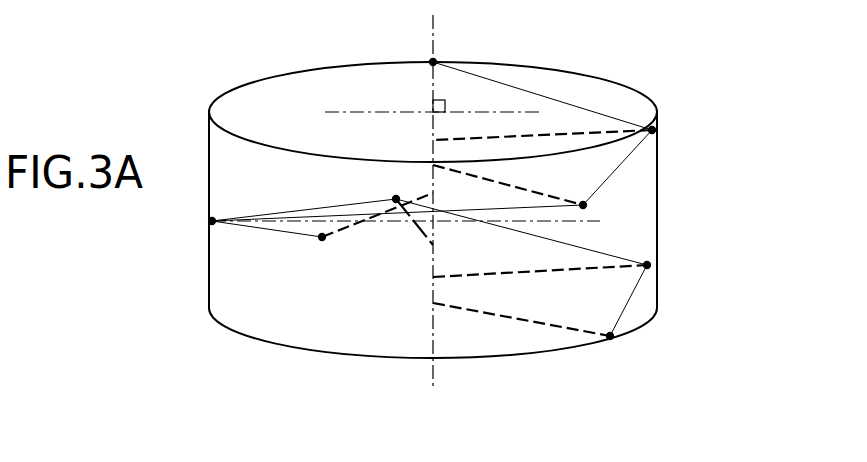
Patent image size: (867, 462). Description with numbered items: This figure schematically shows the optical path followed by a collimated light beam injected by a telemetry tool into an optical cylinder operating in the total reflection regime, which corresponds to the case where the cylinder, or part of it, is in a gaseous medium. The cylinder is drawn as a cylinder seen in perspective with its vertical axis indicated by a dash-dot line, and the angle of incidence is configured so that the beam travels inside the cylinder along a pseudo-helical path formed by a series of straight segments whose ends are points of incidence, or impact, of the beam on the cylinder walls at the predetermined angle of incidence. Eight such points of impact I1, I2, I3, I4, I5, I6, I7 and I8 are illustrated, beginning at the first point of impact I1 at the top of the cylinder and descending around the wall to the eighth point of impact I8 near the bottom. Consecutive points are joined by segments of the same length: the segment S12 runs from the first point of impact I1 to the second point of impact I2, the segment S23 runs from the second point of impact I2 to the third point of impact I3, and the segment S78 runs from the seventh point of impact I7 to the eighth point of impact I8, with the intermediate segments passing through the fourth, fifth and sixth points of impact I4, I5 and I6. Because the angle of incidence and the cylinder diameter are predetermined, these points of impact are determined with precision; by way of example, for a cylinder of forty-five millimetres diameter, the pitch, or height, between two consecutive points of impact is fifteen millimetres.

The first point of impact I1 is at (445, 47).
The second point of impact I2 is at (666, 135).
The third point of impact I3 is at (597, 210).
The fourth point of impact I4 is at (320, 254).
The fifth point of impact I5 is at (200, 218).
The sixth point of impact I6 is at (389, 185).
The seventh point of impact I7 is at (664, 269).
The eighth point of impact I8 is at (619, 352).
The segment S12 is at (564, 105).
The segment S23 is at (625, 162).
The segment S78 is at (628, 298).